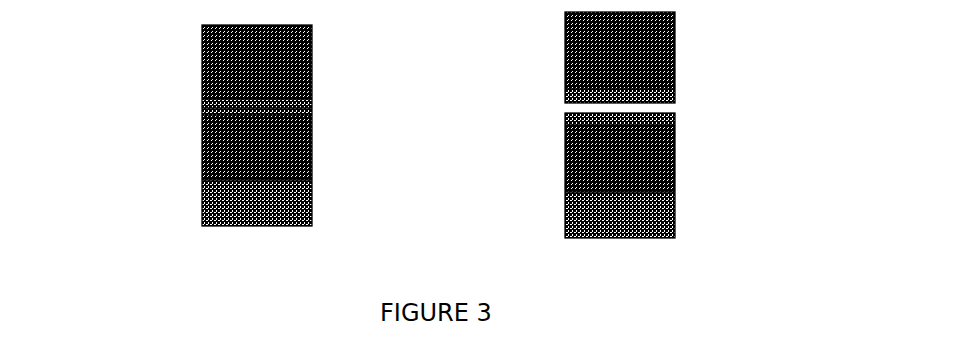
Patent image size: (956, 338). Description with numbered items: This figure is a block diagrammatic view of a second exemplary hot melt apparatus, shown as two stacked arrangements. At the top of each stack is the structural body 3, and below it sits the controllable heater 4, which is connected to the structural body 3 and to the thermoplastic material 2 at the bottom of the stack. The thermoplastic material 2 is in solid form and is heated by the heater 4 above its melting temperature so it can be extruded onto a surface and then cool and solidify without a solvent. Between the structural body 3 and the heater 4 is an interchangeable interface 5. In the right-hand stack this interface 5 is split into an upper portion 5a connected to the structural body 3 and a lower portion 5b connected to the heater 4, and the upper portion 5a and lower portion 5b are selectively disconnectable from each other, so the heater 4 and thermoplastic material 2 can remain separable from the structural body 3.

The thermoplastic material 2 is at (186, 198).
The structural body 3 is at (186, 62).
The heater 4 is at (186, 146).
The interchangeable interface 5 is at (313, 102).
The upper portion 5a is at (557, 86).
The lower portion 5b is at (557, 111).